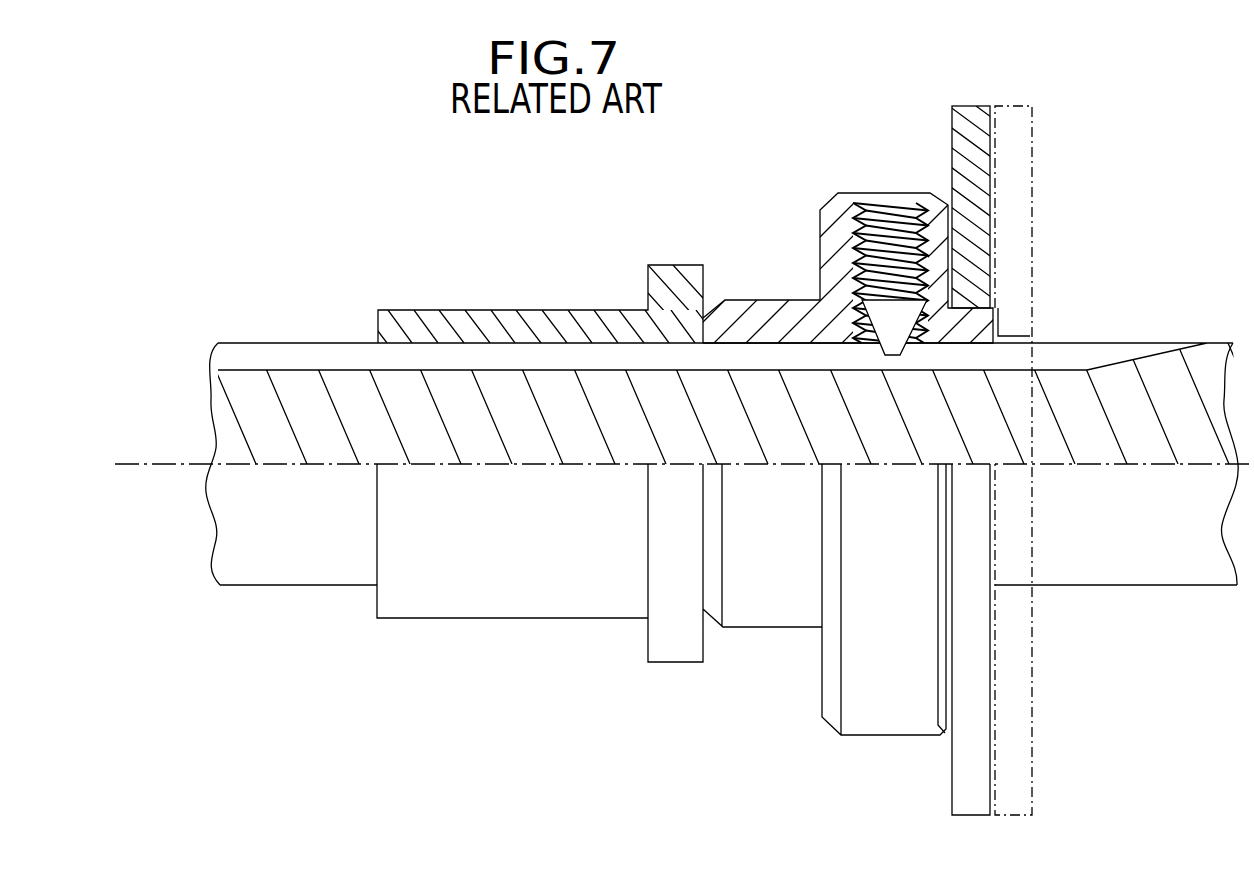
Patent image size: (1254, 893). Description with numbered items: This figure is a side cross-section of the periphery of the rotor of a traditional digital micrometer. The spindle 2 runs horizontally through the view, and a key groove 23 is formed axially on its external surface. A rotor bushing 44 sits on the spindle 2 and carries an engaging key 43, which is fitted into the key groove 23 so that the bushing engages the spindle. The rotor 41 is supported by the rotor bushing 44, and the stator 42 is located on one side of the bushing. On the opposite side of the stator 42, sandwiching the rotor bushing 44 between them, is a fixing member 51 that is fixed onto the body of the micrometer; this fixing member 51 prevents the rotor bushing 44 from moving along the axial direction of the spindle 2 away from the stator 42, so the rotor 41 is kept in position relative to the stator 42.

The spindle 2 is at (215, 408).
The key groove 23 is at (262, 349).
The fixing member 51 is at (505, 310).
The rotor bushing 44 is at (825, 195).
The engaging key 43 is at (893, 197).
The rotor 41 is at (972, 106).
The stator 42 is at (1018, 106).